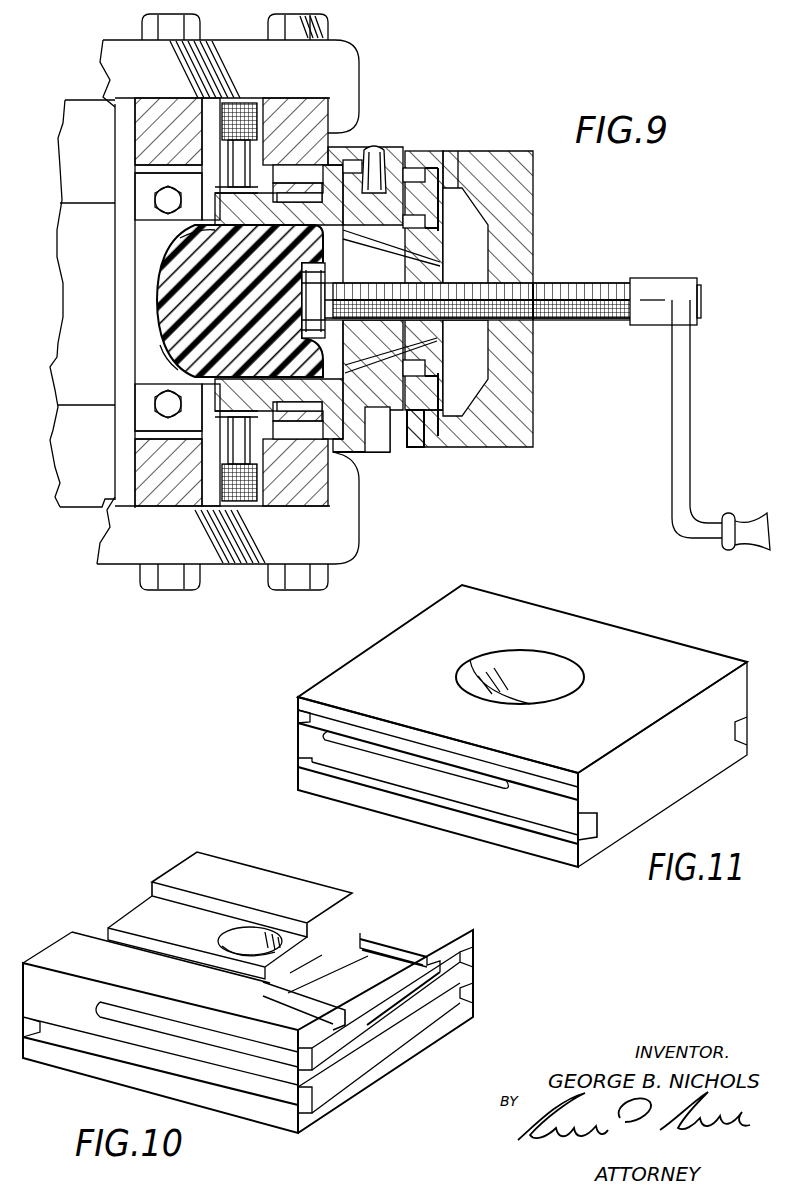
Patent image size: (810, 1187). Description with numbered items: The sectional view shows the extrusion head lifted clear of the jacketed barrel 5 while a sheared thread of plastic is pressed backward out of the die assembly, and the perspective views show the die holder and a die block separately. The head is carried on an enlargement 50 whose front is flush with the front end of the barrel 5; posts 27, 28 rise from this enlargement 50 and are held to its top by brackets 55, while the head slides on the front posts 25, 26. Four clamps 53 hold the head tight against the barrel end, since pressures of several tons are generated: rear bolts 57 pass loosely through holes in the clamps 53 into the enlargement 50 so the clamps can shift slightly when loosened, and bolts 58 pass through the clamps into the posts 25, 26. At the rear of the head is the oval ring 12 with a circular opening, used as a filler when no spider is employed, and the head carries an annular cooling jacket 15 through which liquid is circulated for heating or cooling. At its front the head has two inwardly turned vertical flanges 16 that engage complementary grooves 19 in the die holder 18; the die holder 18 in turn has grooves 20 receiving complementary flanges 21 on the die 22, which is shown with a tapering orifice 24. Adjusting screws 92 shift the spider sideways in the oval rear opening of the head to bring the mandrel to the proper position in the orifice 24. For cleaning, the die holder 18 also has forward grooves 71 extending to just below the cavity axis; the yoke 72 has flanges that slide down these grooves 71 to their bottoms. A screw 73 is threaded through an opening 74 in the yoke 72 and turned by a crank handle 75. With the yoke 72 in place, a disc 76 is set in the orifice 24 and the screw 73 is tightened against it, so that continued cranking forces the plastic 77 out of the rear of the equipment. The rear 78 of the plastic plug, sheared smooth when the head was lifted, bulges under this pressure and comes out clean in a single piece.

In FIG. 9, the jacketed barrel 5 is at (65, 471).
In FIG. 9, the oval ring 12 is at (178, 256).
In FIG. 9, the annular cooling jacket 15 is at (333, 462).
In FIG. 9, the vertical flanges 16 is at (383, 150).
In FIG. 9, the die holder 18 is at (398, 418).
In FIG. 11, the die holder 18 is at (327, 690).
In FIG. 10, the die holder 18 is at (360, 1088).
In FIG. 9, the grooves 19 is at (380, 172).
In FIG. 11, the grooves 19 is at (425, 800).
In FIG. 10, the grooves 19 is at (75, 1048).
In FIG. 10, the grooves 20 is at (397, 955).
In FIG. 10, the flanges 21 is at (367, 960).
In FIG. 9, the die 22 is at (445, 245).
In FIG. 10, the die 22 is at (178, 930).
In FIG. 9, the tapering orifice 24 is at (433, 338).
In FIG. 10, the tapering orifice 24 is at (247, 936).
In FIG. 9, the post 25 is at (325, 498).
In FIG. 9, the post 26 is at (330, 145).
In FIG. 9, the post 27 is at (145, 500).
In FIG. 9, the post 28 is at (135, 115).
In FIG. 9, the enlargement 50 is at (118, 156).
In FIG. 9, the clamps 53 is at (352, 63).
In FIG. 9, the brackets 55 is at (135, 191).
In FIG. 9, the rear bolts 57 is at (142, 27).
In FIG. 9, the bolts 58 is at (310, 27).
In FIG. 9, the forward grooves 71 is at (418, 428).
In FIG. 11, the forward grooves 71 is at (300, 731).
In FIG. 10, the forward grooves 71 is at (130, 1010).
In FIG. 9, the yoke 72 is at (527, 428).
In FIG. 9, the screw 73 is at (573, 290).
In FIG. 9, the opening 74 is at (535, 318).
In FIG. 9, the crank handle 75 is at (688, 425).
In FIG. 9, the disc 76 is at (325, 338).
In FIG. 9, the plastic 77 is at (182, 240).
In FIG. 9, the rear of the plastic plug 78 is at (165, 351).
In FIG. 9, the adjusting screws 92 is at (240, 110).